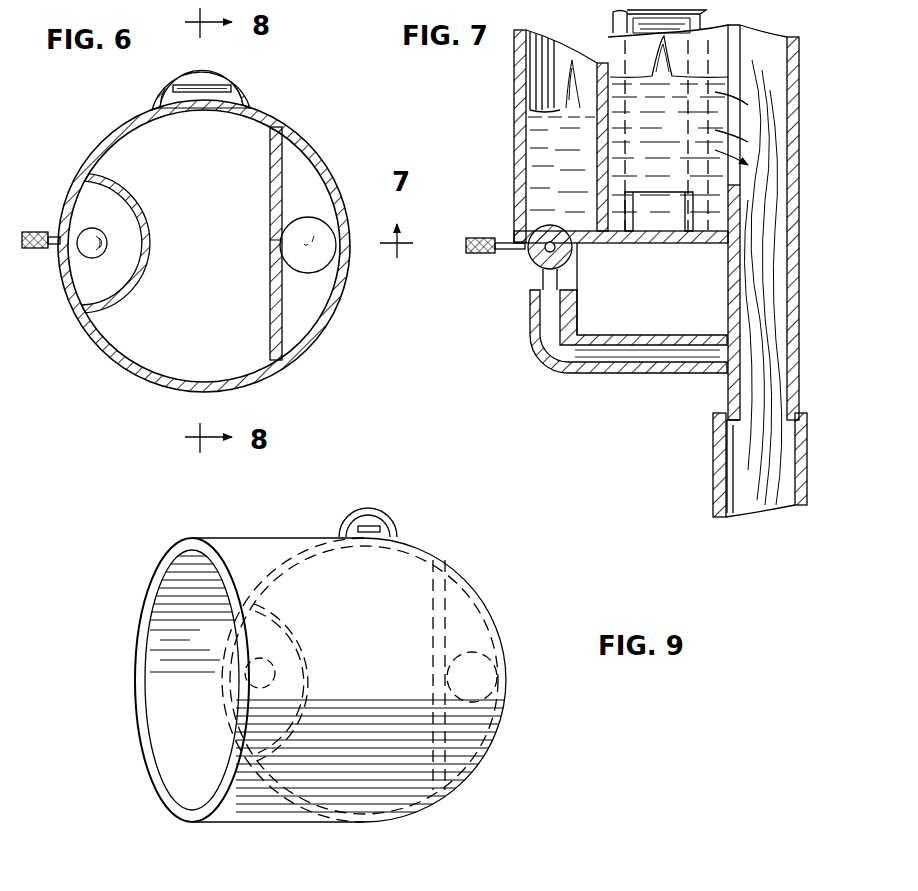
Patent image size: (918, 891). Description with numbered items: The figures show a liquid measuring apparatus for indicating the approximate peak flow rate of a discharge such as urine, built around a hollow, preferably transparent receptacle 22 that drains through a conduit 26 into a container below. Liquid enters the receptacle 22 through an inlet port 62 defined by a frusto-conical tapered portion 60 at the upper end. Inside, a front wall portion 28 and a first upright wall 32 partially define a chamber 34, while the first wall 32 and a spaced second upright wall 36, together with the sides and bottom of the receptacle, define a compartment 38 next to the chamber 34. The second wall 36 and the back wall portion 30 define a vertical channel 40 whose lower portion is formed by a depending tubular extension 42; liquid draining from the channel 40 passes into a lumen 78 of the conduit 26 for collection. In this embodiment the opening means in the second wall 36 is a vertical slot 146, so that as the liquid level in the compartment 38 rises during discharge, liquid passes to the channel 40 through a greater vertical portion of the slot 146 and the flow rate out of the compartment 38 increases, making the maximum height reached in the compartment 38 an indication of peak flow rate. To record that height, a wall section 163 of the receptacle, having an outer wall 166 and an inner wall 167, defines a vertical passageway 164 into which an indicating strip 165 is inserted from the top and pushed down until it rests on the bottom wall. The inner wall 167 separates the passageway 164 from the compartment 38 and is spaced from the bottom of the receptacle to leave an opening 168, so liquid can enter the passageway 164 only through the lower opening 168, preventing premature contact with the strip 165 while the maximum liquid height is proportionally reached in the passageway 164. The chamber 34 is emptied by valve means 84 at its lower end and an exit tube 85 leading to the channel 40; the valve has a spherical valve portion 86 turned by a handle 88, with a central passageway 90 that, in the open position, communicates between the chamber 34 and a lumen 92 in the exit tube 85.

In FIG. 6, the receptacle 22 is at (298, 121).
In FIG. 7, the receptacle 22 is at (512, 94).
In FIG. 9, the receptacle 22 is at (490, 592).
In FIG. 7, the conduit 26 is at (717, 492).
In FIG. 6, the front wall portion 28 is at (58, 260).
In FIG. 7, the front wall portion 28 is at (516, 116).
In FIG. 6, the back wall portion 30 is at (347, 224).
In FIG. 7, the back wall portion 30 is at (800, 148).
In FIG. 6, the first upright wall 32 is at (147, 233).
In FIG. 7, the first upright wall 32 is at (595, 142).
In FIG. 9, the first upright wall 32 is at (300, 641).
In FIG. 6, the chamber 34 is at (97, 207).
In FIG. 7, the chamber 34 is at (536, 136).
In FIG. 6, the second upright wall 36 is at (283, 188).
In FIG. 7, the second upright wall 36 is at (737, 60).
In FIG. 9, the second upright wall 36 is at (462, 570).
In FIG. 6, the compartment 38 is at (177, 303).
In FIG. 7, the compartment 38 is at (717, 33).
In FIG. 9, the compartment 38 is at (398, 790).
In FIG. 6, the vertical channel 40 is at (315, 182).
In FIG. 7, the vertical channel 40 is at (780, 86).
In FIG. 9, the vertical channel 40 is at (478, 630).
In FIG. 7, the tubular extension 42 is at (797, 396).
In FIG. 9, the tapered portion 60 is at (237, 541).
In FIG. 9, the inlet port 62 is at (150, 679).
In FIG. 6, the lumen 78 is at (320, 249).
In FIG. 7, the lumen 78 is at (730, 457).
In FIG. 9, the lumen 78 is at (498, 669).
In FIG. 7, the valve means 84 is at (535, 300).
In FIG. 7, the exit tube 85 is at (635, 373).
In FIG. 6, the spherical valve portion 86 is at (86, 256).
In FIG. 7, the spherical valve portion 86 is at (540, 264).
In FIG. 9, the spherical valve portion 86 is at (277, 641).
In FIG. 6, the handle 88 is at (40, 232).
In FIG. 7, the handle 88 is at (478, 254).
In FIG. 7, the passageway 90 is at (570, 290).
In FIG. 7, the lumen 92 is at (592, 362).
In FIG. 6, the vertical slot 146 is at (270, 240).
In FIG. 7, the vertical slot 146 is at (744, 66).
In FIG. 9, the vertical slot 146 is at (478, 718).
In FIG. 6, the wall section 163 is at (247, 97).
In FIG. 7, the wall section 163 is at (614, 33).
In FIG. 9, the wall section 163 is at (385, 516).
In FIG. 6, the vertical passageway 164 is at (218, 82).
In FIG. 9, the vertical passageway 164 is at (352, 526).
In FIG. 6, the indicating strip 165 is at (165, 106).
In FIG. 7, the indicating strip 165 is at (682, 235).
In FIG. 9, the indicating strip 165 is at (392, 530).
In FIG. 6, the outer wall 166 is at (162, 72).
In FIG. 7, the outer wall 166 is at (612, 15).
In FIG. 9, the outer wall 166 is at (363, 511).
In FIG. 6, the inner wall 167 is at (190, 106).
In FIG. 7, the inner wall 167 is at (680, 137).
In FIG. 7, the opening 168 is at (632, 232).